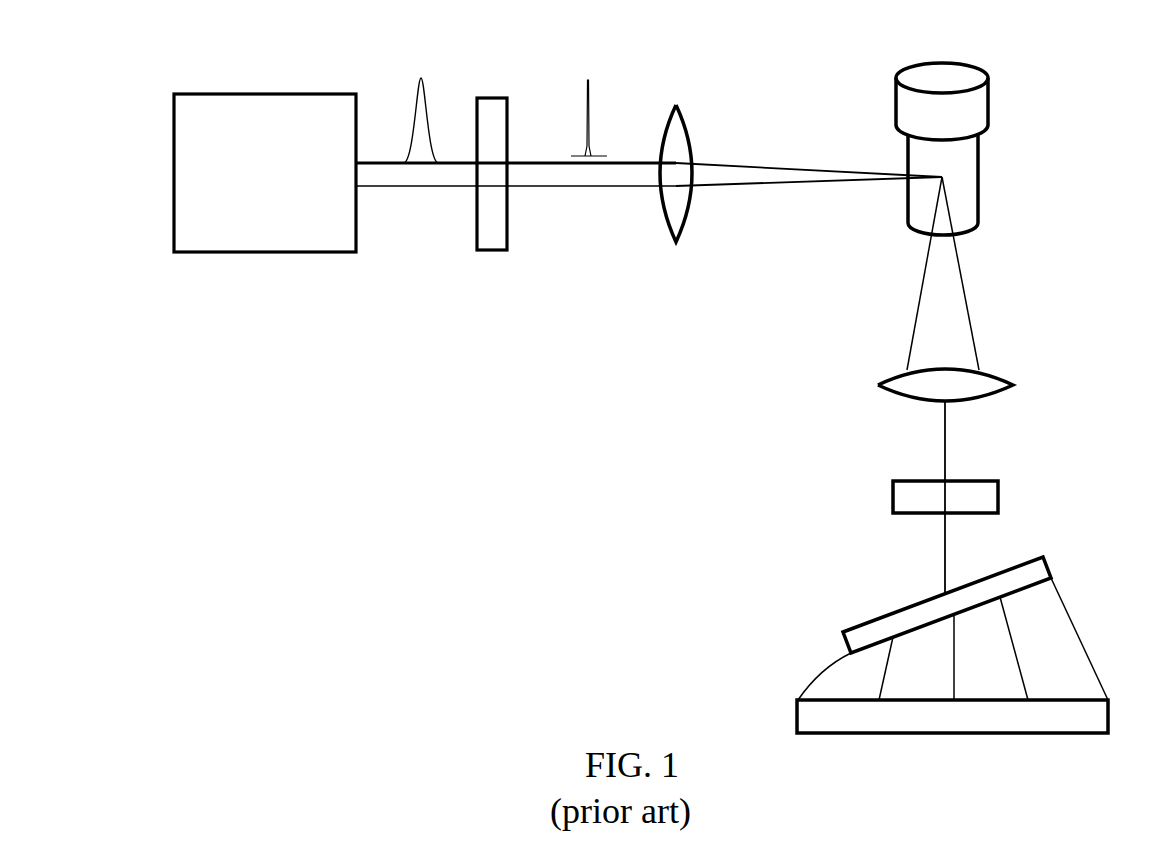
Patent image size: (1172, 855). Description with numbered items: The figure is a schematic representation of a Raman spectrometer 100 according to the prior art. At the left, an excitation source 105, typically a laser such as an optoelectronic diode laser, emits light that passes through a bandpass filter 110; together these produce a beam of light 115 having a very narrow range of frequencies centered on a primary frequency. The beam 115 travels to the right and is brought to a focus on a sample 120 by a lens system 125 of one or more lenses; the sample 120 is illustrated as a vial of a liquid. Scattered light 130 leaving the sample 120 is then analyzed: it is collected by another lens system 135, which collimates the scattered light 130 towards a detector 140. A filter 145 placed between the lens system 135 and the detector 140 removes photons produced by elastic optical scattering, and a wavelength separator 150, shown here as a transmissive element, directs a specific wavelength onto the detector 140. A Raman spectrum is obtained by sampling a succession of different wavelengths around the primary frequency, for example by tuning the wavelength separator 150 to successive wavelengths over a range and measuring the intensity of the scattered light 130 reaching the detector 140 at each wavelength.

The Raman spectrometer 100 is at (1062, 47).
The excitation source 105 is at (312, 94).
The bandpass filter 110 is at (493, 98).
The beam of light 115 is at (544, 186).
The sample 120 is at (896, 110).
The lens system 125 is at (676, 105).
The scattered light 130 is at (917, 311).
The lens system 135 is at (878, 387).
The detector 140 is at (797, 710).
The filter 145 is at (893, 494).
The wavelength separator 150 is at (843, 632).